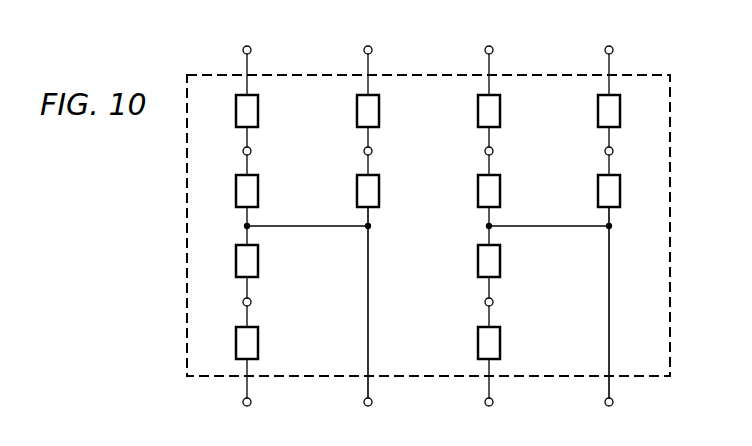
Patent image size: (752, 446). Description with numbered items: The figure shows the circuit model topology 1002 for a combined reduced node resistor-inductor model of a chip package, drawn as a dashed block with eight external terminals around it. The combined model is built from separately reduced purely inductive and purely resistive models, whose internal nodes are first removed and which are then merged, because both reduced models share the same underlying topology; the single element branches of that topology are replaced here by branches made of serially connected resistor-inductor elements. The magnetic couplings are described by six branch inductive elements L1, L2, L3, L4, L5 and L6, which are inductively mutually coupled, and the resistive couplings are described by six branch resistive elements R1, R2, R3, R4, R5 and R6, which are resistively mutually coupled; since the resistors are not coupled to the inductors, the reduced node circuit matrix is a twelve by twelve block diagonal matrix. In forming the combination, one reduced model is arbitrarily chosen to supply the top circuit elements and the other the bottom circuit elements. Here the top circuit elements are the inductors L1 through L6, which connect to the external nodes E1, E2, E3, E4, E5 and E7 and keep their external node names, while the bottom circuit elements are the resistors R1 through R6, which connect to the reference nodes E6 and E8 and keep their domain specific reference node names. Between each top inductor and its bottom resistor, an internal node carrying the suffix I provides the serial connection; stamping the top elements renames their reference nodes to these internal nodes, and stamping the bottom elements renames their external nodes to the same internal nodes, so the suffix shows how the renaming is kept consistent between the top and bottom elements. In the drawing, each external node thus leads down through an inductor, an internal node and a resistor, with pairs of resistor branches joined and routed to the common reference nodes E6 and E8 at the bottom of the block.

The circuit model topology 1002 is at (179, 284).
The branch inductive element L1 is at (259, 111).
The branch inductive element L2 is at (380, 111).
The branch inductive element L3 is at (501, 111).
The branch inductive element L4 is at (621, 111).
The branch inductive element L5 is at (259, 343).
The branch inductive element L6 is at (501, 343).
The branch resistive element R1 is at (261, 191).
The branch resistive element R2 is at (382, 191).
The branch resistive element R3 is at (503, 191).
The branch resistive element R4 is at (623, 191).
The branch resistive element R5 is at (261, 261).
The branch resistive element R6 is at (503, 261).
The external node E1 is at (248, 56).
The external node E2 is at (369, 56).
The external node E3 is at (490, 56).
The external node E4 is at (610, 56).
The external node E5 is at (248, 397).
The reference node E6 is at (384, 413).
The external node E7 is at (490, 397).
The reference node E8 is at (625, 413).